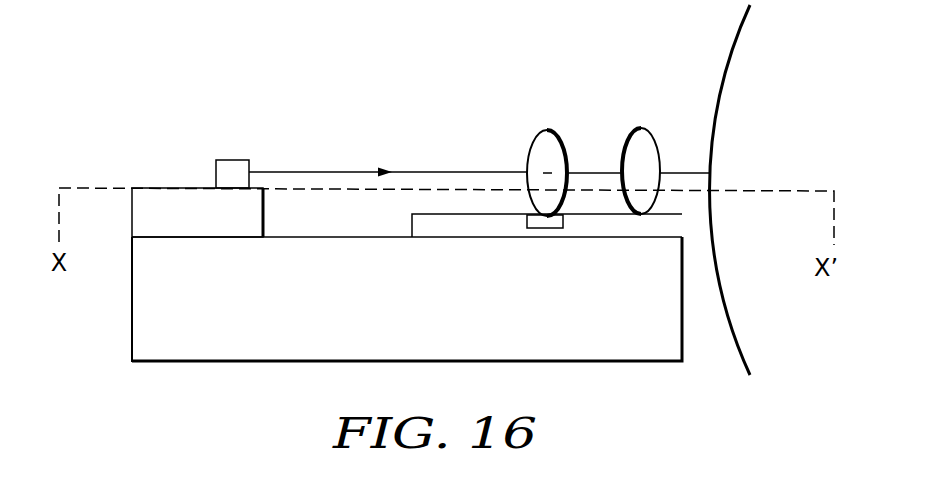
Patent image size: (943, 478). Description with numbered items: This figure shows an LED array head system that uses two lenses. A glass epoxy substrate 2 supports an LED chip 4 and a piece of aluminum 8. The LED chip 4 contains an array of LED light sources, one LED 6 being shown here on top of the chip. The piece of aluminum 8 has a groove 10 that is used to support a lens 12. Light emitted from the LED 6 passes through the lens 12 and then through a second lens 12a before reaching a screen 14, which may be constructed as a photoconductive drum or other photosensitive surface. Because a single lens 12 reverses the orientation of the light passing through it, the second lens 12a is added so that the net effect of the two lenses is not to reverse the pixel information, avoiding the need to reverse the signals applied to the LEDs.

The glass epoxy substrate 2 is at (229, 345).
The LED chip 4 is at (164, 198).
The LED light source 6 is at (232, 160).
The piece of aluminum 8 is at (412, 220).
The groove 10 is at (556, 215).
The lens 12 is at (566, 128).
The second lens 12a is at (659, 122).
The screen 14 is at (756, 90).